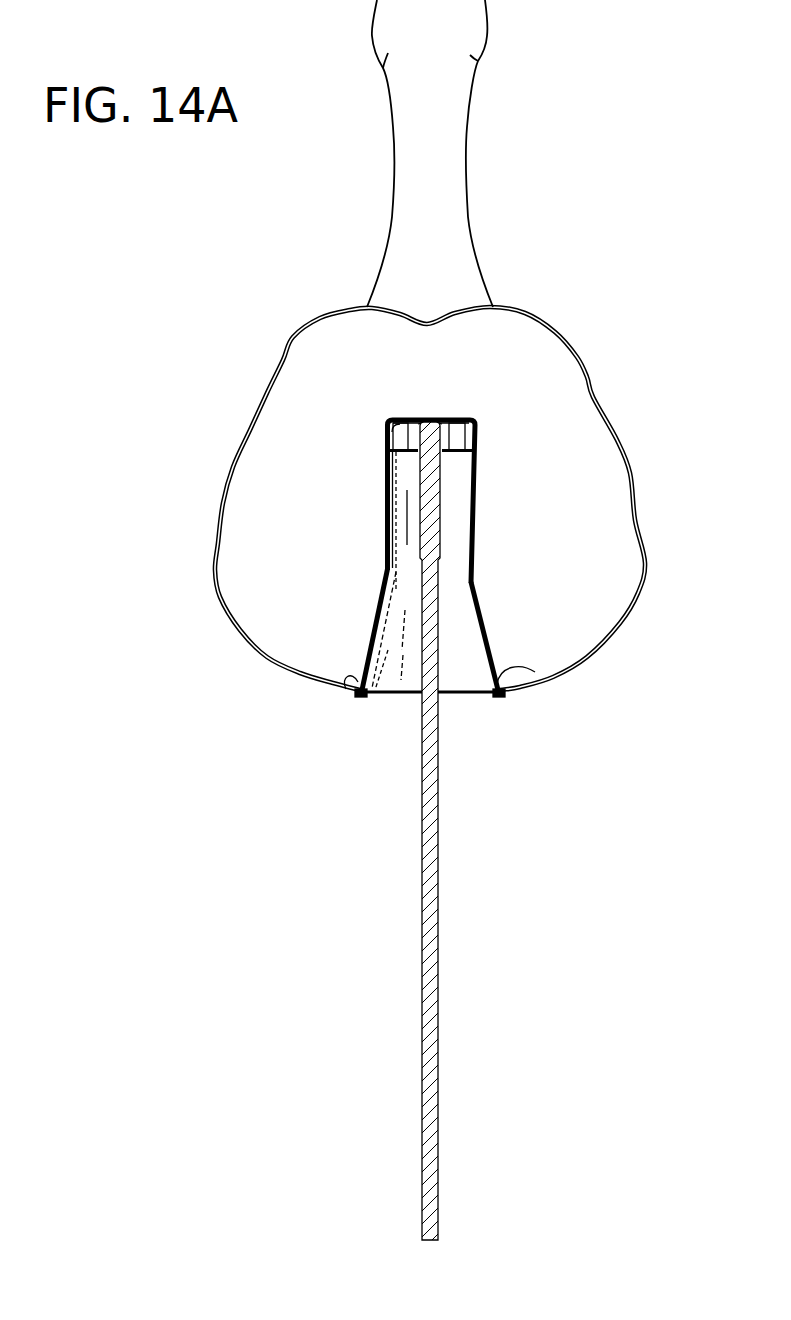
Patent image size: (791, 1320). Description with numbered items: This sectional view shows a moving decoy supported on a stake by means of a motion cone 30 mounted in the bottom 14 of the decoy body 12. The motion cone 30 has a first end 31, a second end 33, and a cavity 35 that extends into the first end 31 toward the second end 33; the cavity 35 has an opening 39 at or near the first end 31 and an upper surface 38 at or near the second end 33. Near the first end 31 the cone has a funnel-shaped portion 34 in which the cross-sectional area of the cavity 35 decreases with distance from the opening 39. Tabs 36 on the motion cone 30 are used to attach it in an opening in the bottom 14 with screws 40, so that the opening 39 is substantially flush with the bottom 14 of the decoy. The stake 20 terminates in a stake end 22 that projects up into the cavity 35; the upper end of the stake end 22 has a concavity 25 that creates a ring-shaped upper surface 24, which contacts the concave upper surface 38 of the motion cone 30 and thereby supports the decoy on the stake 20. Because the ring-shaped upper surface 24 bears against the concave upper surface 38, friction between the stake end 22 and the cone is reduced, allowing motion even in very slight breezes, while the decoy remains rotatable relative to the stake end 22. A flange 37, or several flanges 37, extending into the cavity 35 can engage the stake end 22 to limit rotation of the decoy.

The decoy body 12 is at (295, 333).
The bottom 14 is at (507, 692).
The stake 20 is at (427, 880).
The stake end 22 is at (412, 516).
The ring-shaped upper surface 24 is at (450, 417).
The concavity 25 is at (431, 417).
The motion cone 30 is at (500, 422).
The first end 31 is at (363, 670).
The second end 33 is at (385, 432).
The funnel-shaped portion 34 is at (373, 625).
The cavity 35 is at (467, 633).
The tabs 36 is at (352, 695).
The flange 37 is at (400, 450).
The upper surface 38 is at (400, 420).
The opening 39 is at (382, 673).
The screws 40 is at (350, 687).